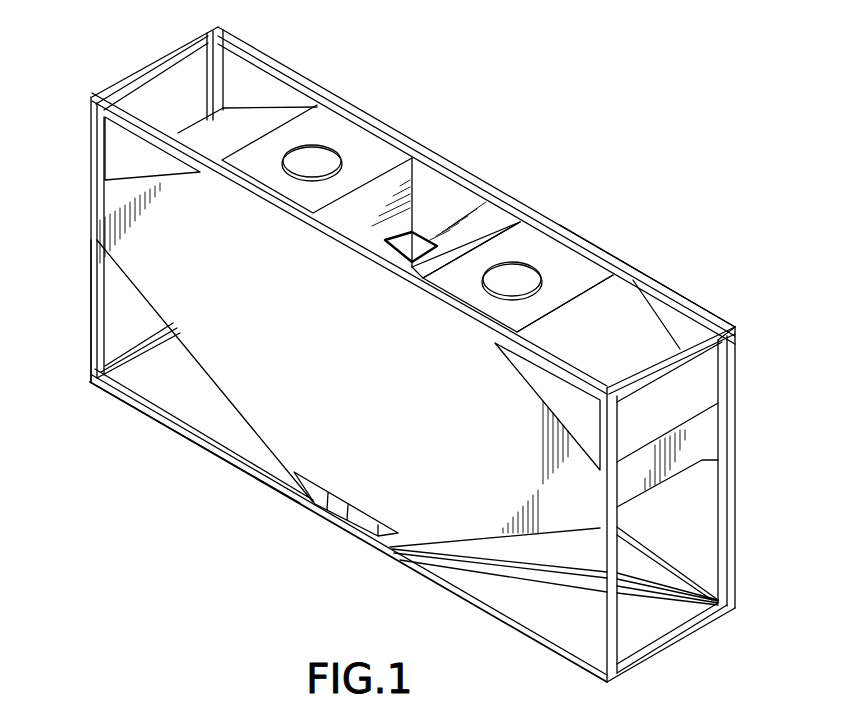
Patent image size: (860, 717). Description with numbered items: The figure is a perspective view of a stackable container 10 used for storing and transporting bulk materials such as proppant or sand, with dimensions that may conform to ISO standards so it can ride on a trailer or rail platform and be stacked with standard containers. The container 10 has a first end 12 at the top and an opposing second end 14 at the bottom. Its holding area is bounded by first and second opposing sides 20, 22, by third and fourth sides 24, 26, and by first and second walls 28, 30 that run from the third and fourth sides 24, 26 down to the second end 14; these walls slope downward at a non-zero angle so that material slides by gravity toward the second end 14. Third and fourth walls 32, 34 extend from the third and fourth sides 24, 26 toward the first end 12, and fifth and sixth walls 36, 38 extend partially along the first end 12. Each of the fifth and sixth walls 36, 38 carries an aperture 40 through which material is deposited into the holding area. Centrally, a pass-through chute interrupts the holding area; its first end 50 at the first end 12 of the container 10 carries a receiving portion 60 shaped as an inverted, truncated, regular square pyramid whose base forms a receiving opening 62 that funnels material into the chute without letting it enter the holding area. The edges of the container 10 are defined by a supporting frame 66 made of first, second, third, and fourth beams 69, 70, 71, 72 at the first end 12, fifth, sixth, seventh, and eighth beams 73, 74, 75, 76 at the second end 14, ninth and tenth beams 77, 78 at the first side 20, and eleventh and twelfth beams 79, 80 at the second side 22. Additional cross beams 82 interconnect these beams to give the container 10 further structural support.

The stackable container 10 is at (602, 160).
The first end 12 is at (337, 92).
The second end 14 is at (217, 460).
The first side 20 is at (468, 512).
The second side 22 is at (673, 325).
The third side 24 is at (97, 212).
The fourth side 26 is at (695, 435).
The first wall 28 is at (183, 353).
The second wall 30 is at (533, 550).
The third wall 32 is at (247, 120).
The fourth wall 34 is at (618, 317).
The fifth wall 36 is at (378, 160).
The sixth wall 38 is at (559, 257).
The aperture 40 is at (320, 157).
The first end of the chute 50 is at (437, 183).
The receiving portion 60 is at (447, 210).
The receiving opening 62 is at (493, 197).
The supporting frame 66 is at (87, 345).
The first beam 69 is at (273, 202).
The second beam 70 is at (162, 62).
The third beam 71 is at (608, 258).
The fourth beam 72 is at (727, 355).
The fifth beam 73 is at (173, 427).
The sixth beam 74 is at (135, 352).
The seventh beam 75 is at (662, 562).
The eighth beam 76 is at (683, 628).
The ninth beam 77 is at (97, 272).
The tenth beam 78 is at (612, 615).
The eleventh beam 79 is at (223, 57).
The twelfth beam 80 is at (722, 473).
The cross beam 82 is at (568, 573).